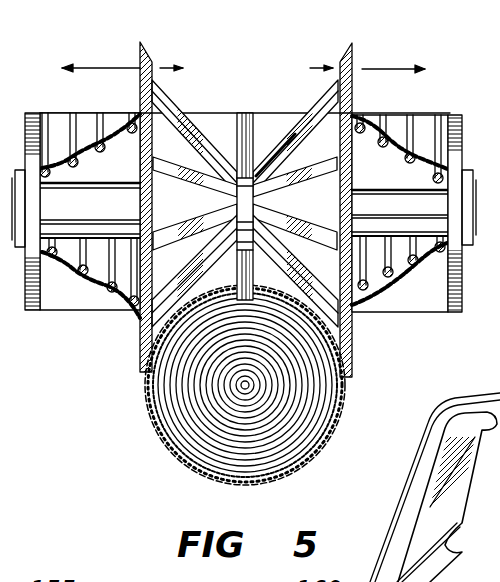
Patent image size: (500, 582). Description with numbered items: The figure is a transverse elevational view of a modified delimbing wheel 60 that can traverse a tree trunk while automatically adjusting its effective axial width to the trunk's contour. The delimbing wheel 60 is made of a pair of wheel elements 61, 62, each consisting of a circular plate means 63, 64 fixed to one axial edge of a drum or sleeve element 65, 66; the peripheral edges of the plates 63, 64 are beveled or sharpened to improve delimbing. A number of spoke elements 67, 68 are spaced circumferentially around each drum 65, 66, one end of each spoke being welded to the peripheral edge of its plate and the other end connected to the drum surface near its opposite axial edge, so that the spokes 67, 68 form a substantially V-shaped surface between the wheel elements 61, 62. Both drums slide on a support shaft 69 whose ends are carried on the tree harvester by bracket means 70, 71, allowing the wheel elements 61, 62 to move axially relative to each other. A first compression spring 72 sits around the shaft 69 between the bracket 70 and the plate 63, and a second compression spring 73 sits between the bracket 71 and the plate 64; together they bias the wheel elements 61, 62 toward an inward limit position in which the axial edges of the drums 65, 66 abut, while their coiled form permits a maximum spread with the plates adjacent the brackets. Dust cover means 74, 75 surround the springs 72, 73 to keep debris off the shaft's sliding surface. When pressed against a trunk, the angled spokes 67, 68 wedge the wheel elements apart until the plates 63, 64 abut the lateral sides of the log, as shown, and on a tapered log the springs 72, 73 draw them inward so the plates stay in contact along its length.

The delimbing wheel 60 is at (266, 150).
The wheel element 61 is at (172, 100).
The wheel element 62 is at (331, 84).
The circular plate means 63 is at (140, 62).
The circular plate means 64 is at (353, 62).
The drum element 65 is at (186, 222).
The drum element 66 is at (333, 222).
The spoke element 67 is at (242, 150).
The spoke element 68 is at (323, 102).
The support shaft 69 is at (97, 219).
The bracket means 70 is at (25, 288).
The bracket means 71 is at (463, 280).
The first compression spring 72 is at (133, 274).
The second compression spring 73 is at (395, 262).
The dust cover means 74 is at (94, 135).
The dust cover means 75 is at (400, 136).